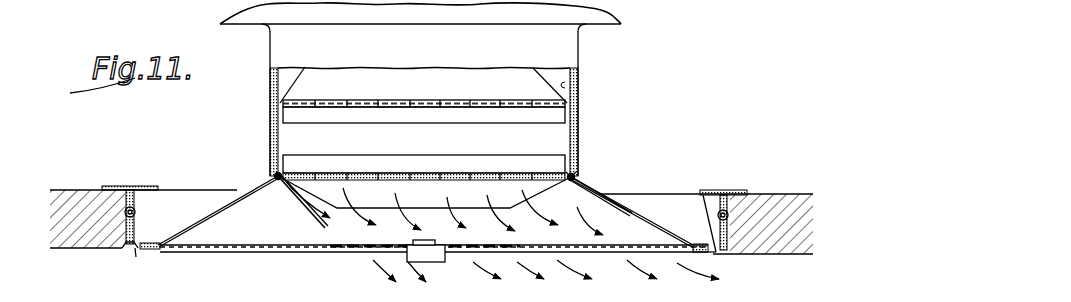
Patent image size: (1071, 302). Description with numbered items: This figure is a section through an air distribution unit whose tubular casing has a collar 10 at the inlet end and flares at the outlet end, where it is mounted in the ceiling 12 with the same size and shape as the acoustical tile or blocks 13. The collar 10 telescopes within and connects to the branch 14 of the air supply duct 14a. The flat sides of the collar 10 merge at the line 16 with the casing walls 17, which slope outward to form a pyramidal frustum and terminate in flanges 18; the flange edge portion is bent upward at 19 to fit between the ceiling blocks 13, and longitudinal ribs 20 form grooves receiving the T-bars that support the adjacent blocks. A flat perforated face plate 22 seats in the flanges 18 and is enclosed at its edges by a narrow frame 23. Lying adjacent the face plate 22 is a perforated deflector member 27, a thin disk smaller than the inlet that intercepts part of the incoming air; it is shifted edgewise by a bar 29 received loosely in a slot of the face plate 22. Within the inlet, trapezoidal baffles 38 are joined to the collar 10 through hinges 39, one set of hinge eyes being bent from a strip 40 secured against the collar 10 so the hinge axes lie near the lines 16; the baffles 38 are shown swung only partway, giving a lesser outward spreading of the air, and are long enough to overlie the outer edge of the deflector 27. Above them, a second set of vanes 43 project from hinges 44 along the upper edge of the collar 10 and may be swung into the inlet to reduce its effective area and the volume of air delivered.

The collar 10 is at (268, 140).
The ceiling 12 is at (95, 249).
The tile or blocks 13 is at (73, 192).
The branch 14 is at (270, 56).
The air supply duct 14a is at (240, 19).
The line of intersection 16 is at (574, 176).
The casing walls 17 is at (652, 220).
The flanges 18 is at (134, 222).
The upwardly bent flange edge portion 19 is at (136, 257).
The longitudinal ribs 20 is at (135, 207).
The perforated face plate 22 is at (246, 245).
The frame 23 is at (152, 250).
The deflector member 27 is at (366, 245).
The bar 29 is at (430, 258).
The vanes or baffles 38 is at (327, 192).
The hinges 39 is at (274, 175).
The strip 40 is at (330, 163).
The second set of vanes 43 is at (335, 82).
The hinges 44 is at (303, 110).